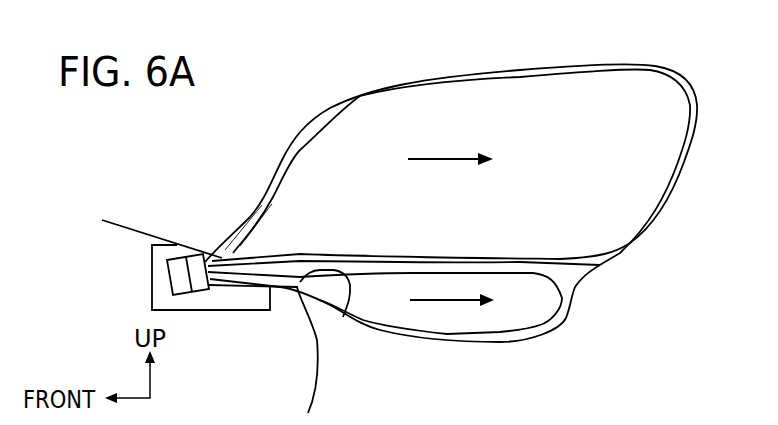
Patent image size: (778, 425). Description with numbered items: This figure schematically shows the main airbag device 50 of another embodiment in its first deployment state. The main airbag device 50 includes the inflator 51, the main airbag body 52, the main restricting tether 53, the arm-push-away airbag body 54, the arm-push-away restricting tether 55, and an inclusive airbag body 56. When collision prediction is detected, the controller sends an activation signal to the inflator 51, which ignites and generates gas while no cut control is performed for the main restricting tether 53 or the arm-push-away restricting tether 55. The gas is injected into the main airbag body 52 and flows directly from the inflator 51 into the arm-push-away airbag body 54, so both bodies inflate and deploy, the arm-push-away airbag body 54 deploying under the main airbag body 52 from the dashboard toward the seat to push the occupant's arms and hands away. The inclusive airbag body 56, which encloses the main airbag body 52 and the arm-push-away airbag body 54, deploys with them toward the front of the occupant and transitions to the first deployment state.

The main airbag device 50 is at (232, 312).
The inflator 51 is at (173, 250).
The main airbag body 52 is at (437, 116).
The main restricting tether 53 is at (242, 214).
The arm-push-away airbag body 54 is at (498, 320).
The arm-push-away restricting tether 55 is at (343, 317).
The inclusive airbag body 56 is at (486, 76).